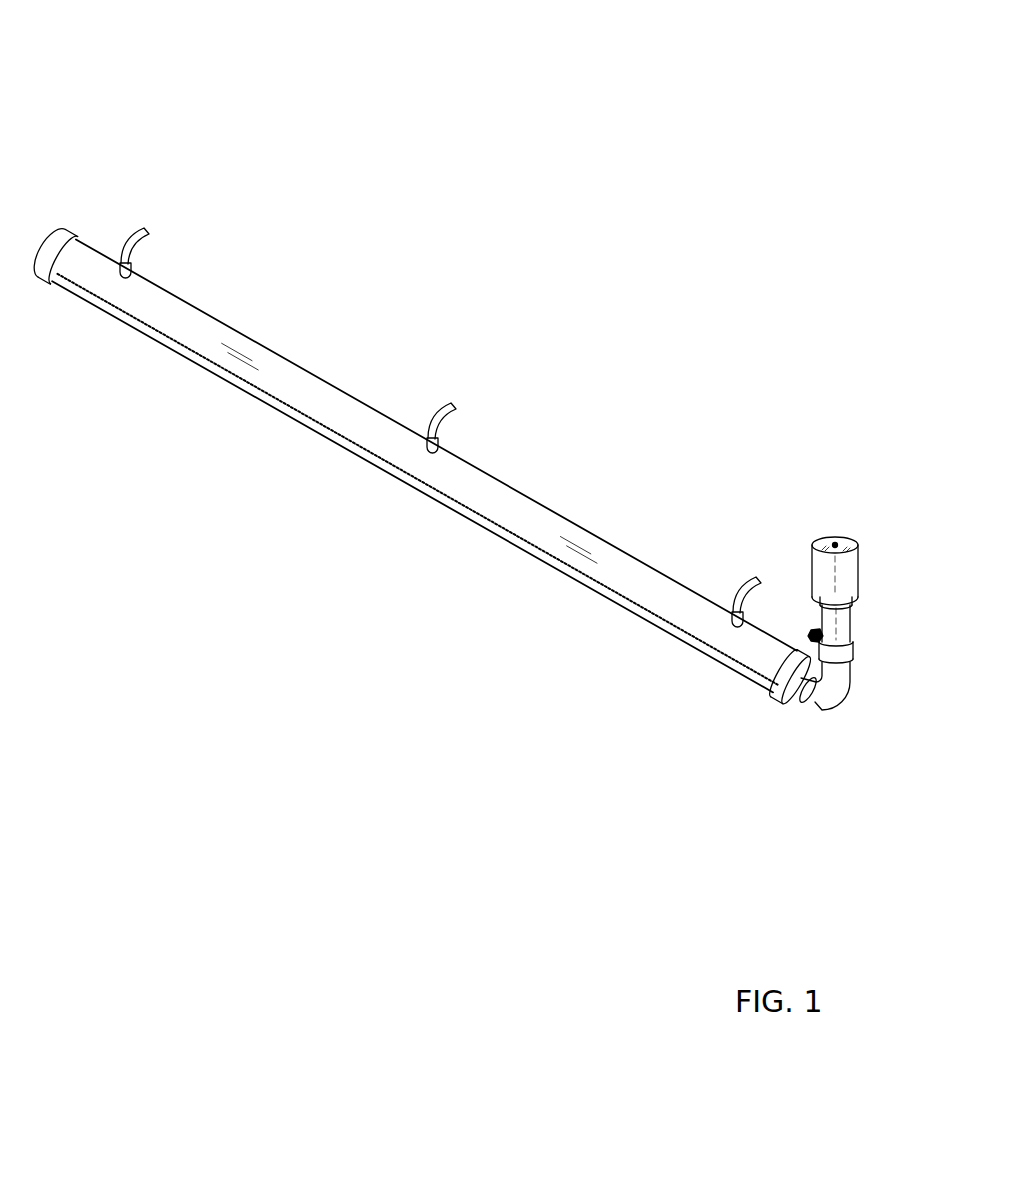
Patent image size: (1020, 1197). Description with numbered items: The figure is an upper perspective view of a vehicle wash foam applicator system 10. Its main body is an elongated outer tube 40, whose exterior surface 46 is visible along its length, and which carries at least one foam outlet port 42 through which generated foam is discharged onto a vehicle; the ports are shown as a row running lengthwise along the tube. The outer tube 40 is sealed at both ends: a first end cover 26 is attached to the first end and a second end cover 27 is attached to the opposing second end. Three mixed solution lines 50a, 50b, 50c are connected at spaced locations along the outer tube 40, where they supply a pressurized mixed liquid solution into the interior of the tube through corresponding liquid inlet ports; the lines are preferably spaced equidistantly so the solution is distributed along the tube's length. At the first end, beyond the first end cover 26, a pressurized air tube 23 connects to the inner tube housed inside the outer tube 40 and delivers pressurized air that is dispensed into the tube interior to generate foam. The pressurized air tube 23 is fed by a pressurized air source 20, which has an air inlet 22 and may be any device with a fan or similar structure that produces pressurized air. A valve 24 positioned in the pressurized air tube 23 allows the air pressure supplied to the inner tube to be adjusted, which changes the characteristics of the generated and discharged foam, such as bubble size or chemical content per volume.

The vehicle wash foam applicator system 10 is at (556, 100).
The pressurized air source 20 is at (812, 583).
The air inlet 22 is at (836, 543).
The pressurized air tube 23 is at (843, 628).
The valve 24 is at (815, 636).
The first end cover 26 is at (793, 694).
The second end cover 27 is at (60, 233).
The outer tube 40 is at (515, 490).
The foam outlet port 42 is at (278, 406).
The exterior surface 46 is at (170, 310).
The mixed solution line 50a is at (148, 227).
The mixed solution line 50b is at (452, 404).
The mixed solution line 50c is at (757, 580).